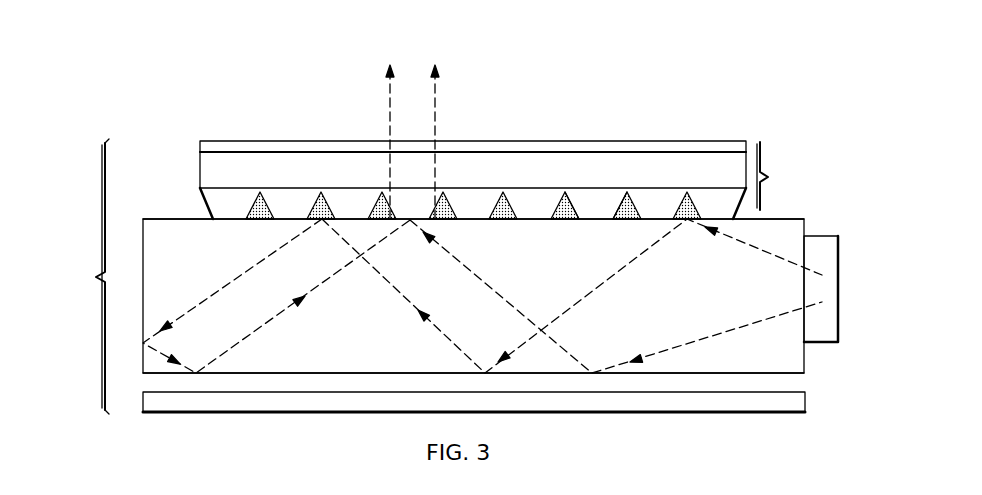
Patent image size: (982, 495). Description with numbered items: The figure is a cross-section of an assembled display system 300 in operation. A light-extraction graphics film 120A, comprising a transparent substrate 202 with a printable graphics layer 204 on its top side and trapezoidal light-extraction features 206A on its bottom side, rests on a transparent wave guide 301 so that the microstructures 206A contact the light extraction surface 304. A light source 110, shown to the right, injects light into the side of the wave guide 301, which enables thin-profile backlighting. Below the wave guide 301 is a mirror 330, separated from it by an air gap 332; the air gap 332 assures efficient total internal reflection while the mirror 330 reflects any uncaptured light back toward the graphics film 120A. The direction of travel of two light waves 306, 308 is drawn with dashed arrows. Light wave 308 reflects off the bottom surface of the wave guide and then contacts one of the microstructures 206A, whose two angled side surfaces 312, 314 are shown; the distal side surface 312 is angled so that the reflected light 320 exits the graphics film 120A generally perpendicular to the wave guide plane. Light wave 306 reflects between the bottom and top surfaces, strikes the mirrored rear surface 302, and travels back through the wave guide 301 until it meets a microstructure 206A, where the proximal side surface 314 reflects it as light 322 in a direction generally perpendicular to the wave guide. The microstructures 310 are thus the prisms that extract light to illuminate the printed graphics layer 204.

The light source 110 is at (822, 236).
The light-extraction graphics film 120A is at (794, 176).
The transparent substrate 202 is at (208, 168).
The printable graphics layer 204 is at (272, 147).
The light-extraction features 206A is at (418, 198).
The assembled display system 300 is at (82, 276).
The transparent wave guide 301 is at (140, 369).
The rear surface 302 is at (145, 266).
The light extraction surface 304 is at (153, 218).
The light wave 306 is at (275, 320).
The light wave 308 is at (481, 280).
The prism structures 310 is at (562, 221).
The distal side surface 312 is at (578, 198).
The proximal side surface 314 is at (608, 198).
The light 320 is at (386, 127).
The light 322 is at (437, 127).
The mirror 330 is at (661, 414).
The air gap 332 is at (814, 384).